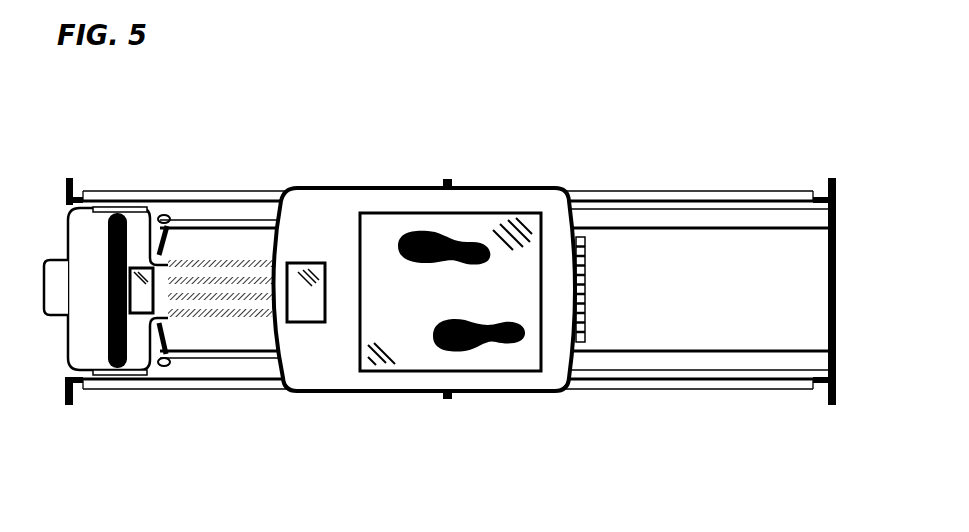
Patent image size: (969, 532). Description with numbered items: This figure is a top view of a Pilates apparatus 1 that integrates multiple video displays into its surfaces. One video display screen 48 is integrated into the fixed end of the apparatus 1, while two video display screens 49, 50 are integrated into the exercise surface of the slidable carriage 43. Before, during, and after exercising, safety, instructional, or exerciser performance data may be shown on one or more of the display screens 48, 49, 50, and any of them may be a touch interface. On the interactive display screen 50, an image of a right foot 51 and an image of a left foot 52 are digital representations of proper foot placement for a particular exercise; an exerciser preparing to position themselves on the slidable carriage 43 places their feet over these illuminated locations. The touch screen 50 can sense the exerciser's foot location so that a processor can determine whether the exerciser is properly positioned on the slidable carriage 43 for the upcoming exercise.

The Pilates apparatus 1 is at (250, 143).
The slidable carriage 43 is at (313, 392).
The video display screen 48 is at (153, 300).
The video display screen 49 is at (308, 263).
The interactive display screen 50 is at (398, 372).
The image of a right foot 51 is at (466, 236).
The image of a left foot 52 is at (492, 348).